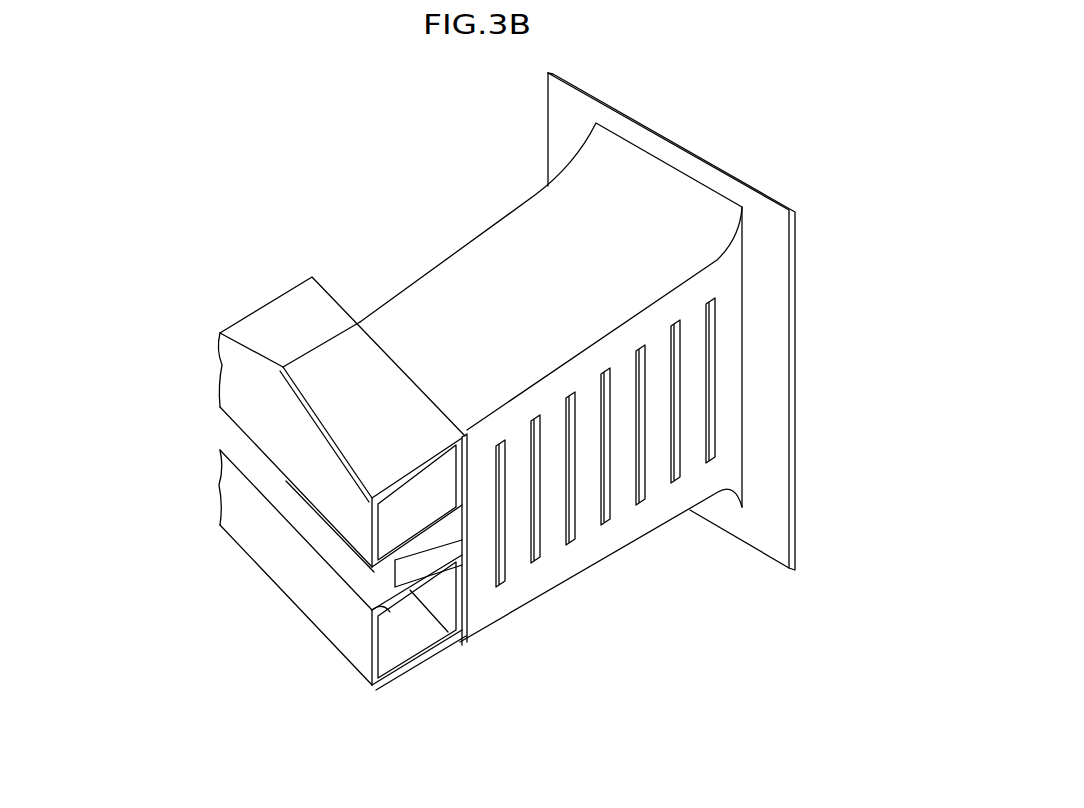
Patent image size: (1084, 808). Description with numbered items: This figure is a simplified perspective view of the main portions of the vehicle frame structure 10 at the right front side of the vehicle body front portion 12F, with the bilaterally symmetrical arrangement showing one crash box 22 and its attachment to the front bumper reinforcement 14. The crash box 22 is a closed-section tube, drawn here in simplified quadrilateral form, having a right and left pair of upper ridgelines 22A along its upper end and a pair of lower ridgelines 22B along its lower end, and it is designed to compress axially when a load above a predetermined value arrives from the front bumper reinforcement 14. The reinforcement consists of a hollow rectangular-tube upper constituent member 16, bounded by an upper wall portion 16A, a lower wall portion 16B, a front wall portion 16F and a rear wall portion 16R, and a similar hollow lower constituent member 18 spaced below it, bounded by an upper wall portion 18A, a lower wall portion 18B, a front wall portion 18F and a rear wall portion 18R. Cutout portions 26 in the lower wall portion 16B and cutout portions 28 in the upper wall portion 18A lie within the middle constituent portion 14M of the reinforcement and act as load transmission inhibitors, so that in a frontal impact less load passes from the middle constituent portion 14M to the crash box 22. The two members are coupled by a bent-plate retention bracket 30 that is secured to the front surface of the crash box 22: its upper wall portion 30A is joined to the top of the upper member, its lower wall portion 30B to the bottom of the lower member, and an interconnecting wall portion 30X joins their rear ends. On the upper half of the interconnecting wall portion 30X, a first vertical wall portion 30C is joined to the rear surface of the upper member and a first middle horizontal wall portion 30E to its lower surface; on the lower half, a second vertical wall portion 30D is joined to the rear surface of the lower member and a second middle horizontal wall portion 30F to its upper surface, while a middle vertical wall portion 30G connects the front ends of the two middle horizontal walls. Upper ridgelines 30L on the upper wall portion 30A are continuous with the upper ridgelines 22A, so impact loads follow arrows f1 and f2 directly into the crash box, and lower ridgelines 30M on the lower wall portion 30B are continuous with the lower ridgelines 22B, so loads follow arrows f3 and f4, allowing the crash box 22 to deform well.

The vehicle frame structure 10 is at (367, 177).
The vehicle body front portion 12F is at (403, 138).
The front bumper reinforcement 14 is at (242, 278).
The middle constituent portion 14M is at (210, 510).
The upper constituent member 16 is at (325, 439).
The upper wall portion 16A is at (285, 310).
The lower wall portion 16B is at (469, 478).
The front wall portion 16F is at (215, 453).
The rear wall portion 16R is at (466, 445).
The lower constituent member 18 is at (365, 579).
The upper wall portion 18A is at (268, 478).
The lower wall portion 18B is at (400, 678).
The front wall portion 18F is at (260, 545).
The rear wall portion 18R is at (467, 620).
The crash box 22 is at (551, 382).
The upper ridgelines 22A is at (512, 215).
The lower ridgelines 22B is at (645, 534).
The cutout portions 26 is at (372, 515).
The cutout portions 28 is at (370, 622).
The retention bracket 30 is at (451, 501).
The upper wall portion 30A is at (382, 360).
The lower wall portion 30B is at (410, 676).
The first vertical wall portion 30C is at (527, 566).
The second vertical wall portion 30D is at (467, 593).
The first middle horizontal wall portion 30E is at (400, 478).
The second middle horizontal wall portion 30F is at (418, 593).
The middle vertical wall portion 30G is at (328, 536).
The upper ridgelines 30L is at (325, 332).
The lower ridgelines 30M is at (420, 670).
The interconnecting wall portion 30X is at (518, 437).
The arrow f1 is at (300, 363).
The arrow f2 is at (435, 278).
The arrow f3 is at (430, 676).
The arrow f4 is at (533, 613).